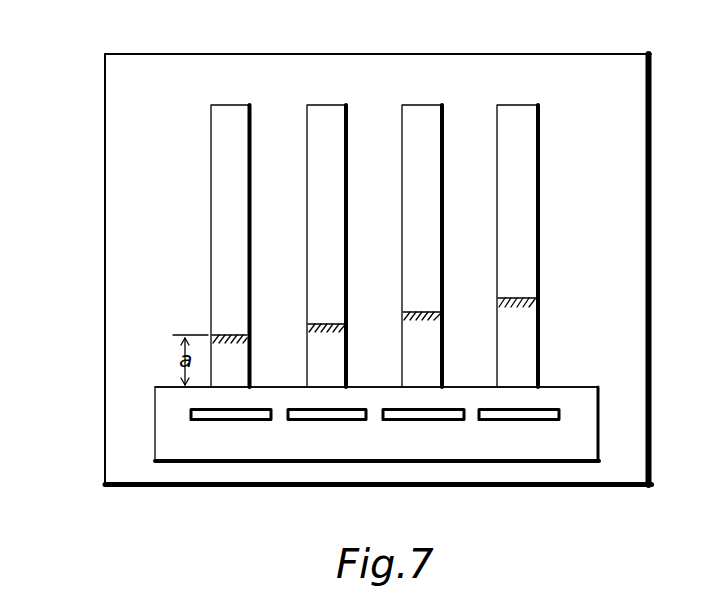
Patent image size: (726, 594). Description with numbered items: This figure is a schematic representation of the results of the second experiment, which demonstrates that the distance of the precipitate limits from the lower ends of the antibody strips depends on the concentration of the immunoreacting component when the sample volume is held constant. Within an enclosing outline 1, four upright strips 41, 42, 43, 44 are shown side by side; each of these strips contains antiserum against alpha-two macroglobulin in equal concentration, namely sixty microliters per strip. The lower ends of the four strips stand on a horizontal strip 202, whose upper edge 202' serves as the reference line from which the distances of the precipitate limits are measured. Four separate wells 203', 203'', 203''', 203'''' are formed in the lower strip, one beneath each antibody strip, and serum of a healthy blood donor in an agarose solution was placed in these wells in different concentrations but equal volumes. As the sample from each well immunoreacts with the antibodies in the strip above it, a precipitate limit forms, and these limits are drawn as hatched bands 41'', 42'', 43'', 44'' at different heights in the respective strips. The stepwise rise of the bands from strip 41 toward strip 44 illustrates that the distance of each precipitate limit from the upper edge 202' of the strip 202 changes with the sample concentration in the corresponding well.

The housing 1 is at (626, 186).
The strip 41 is at (230, 224).
The strip 42 is at (326, 224).
The strip 43 is at (422, 224).
The strip 44 is at (517, 224).
The stop on first pin 41'' is at (206, 307).
The stop on second pin 42'' is at (302, 299).
The stop on third pin 43'' is at (399, 288).
The stop on fourth pin 44'' is at (494, 279).
The strip 202 is at (398, 454).
The upper edge of strip 202' is at (388, 348).
The well 203' is at (231, 466).
The well 203'' is at (327, 466).
The well 203''' is at (425, 466).
The well 203'''' is at (529, 466).